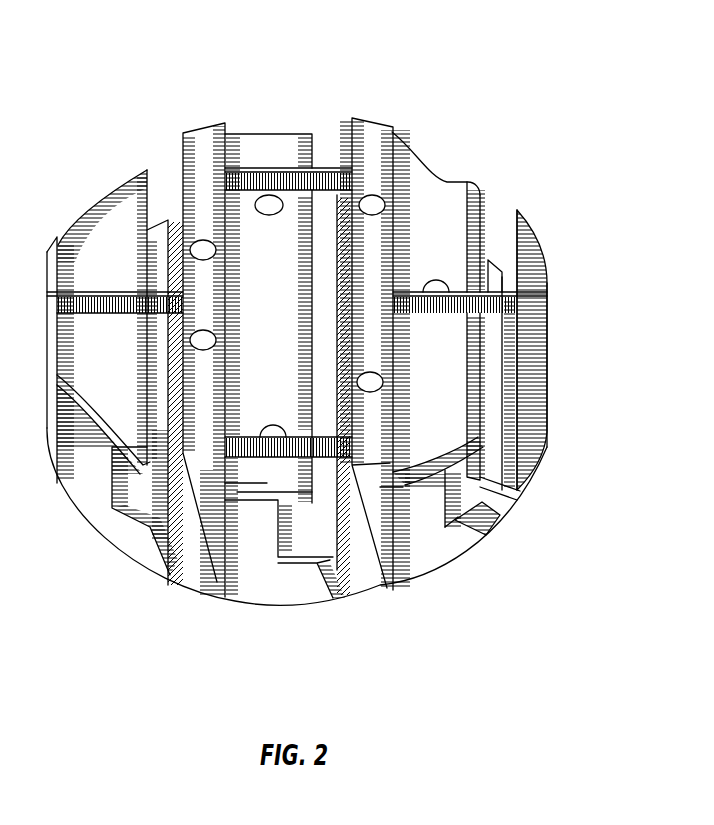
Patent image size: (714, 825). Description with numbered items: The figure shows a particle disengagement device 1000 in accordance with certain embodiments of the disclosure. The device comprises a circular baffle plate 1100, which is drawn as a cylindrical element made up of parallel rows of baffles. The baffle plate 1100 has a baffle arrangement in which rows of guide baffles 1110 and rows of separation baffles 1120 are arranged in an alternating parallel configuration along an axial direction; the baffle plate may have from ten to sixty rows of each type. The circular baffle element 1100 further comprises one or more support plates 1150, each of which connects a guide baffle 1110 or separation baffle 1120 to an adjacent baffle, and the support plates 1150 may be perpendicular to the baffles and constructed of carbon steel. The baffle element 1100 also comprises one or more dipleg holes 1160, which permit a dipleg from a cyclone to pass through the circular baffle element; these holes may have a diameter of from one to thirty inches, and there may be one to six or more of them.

The particle disengagement device 1000 is at (455, 45).
The baffle plate 1100 is at (505, 655).
The guide baffles 1110 is at (215, 578).
The separation baffles 1120 is at (343, 598).
The support plates 1150 is at (333, 165).
The dipleg holes 1160 is at (436, 282).